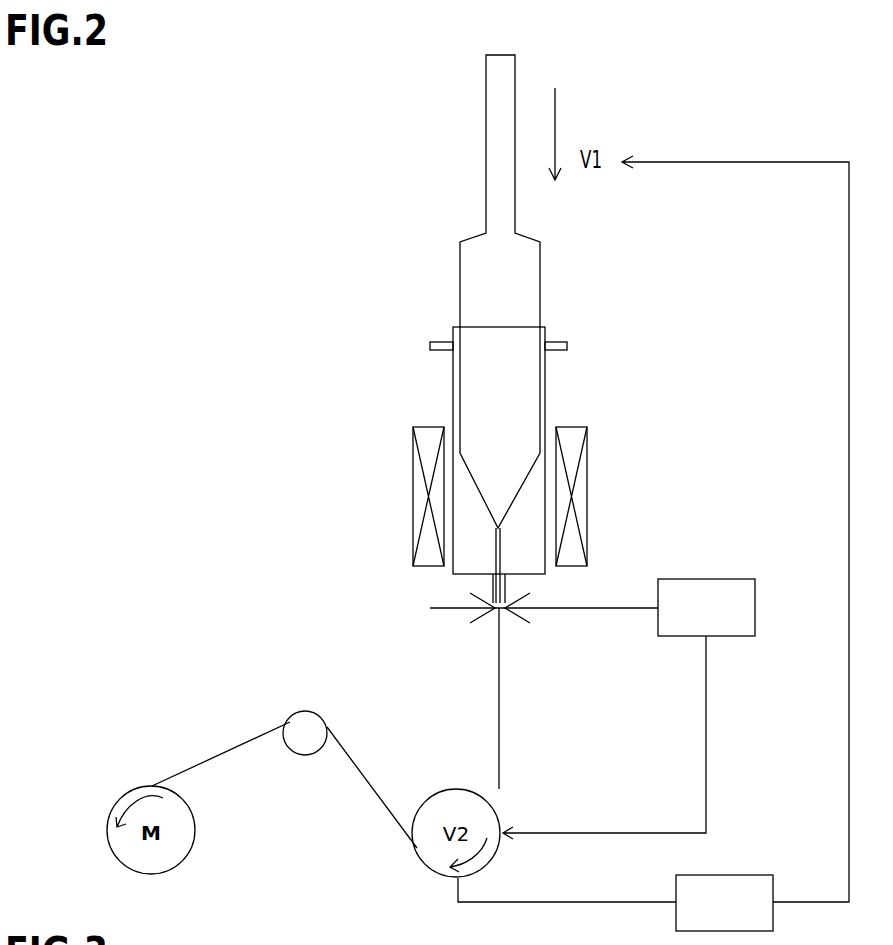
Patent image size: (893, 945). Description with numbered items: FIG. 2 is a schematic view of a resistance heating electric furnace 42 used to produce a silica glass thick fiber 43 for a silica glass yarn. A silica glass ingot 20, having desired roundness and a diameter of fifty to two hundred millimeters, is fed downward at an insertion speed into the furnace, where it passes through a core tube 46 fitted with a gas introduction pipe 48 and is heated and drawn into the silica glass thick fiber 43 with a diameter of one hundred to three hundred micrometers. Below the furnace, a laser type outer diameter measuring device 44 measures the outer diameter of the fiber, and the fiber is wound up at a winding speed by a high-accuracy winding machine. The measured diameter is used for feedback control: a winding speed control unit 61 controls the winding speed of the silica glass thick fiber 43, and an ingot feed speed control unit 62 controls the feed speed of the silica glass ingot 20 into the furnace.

The silica glass ingot 20 is at (525, 278).
The core tube 46 is at (545, 380).
The gas introduction pipe 48 is at (567, 346).
The resistance heating electric furnace 42 is at (583, 492).
The laser type outer diameter measuring device 44 is at (588, 608).
The silica glass thick fiber 43 is at (499, 720).
The winding speed control unit 61 is at (713, 579).
The ingot feed speed control unit 62 is at (732, 882).